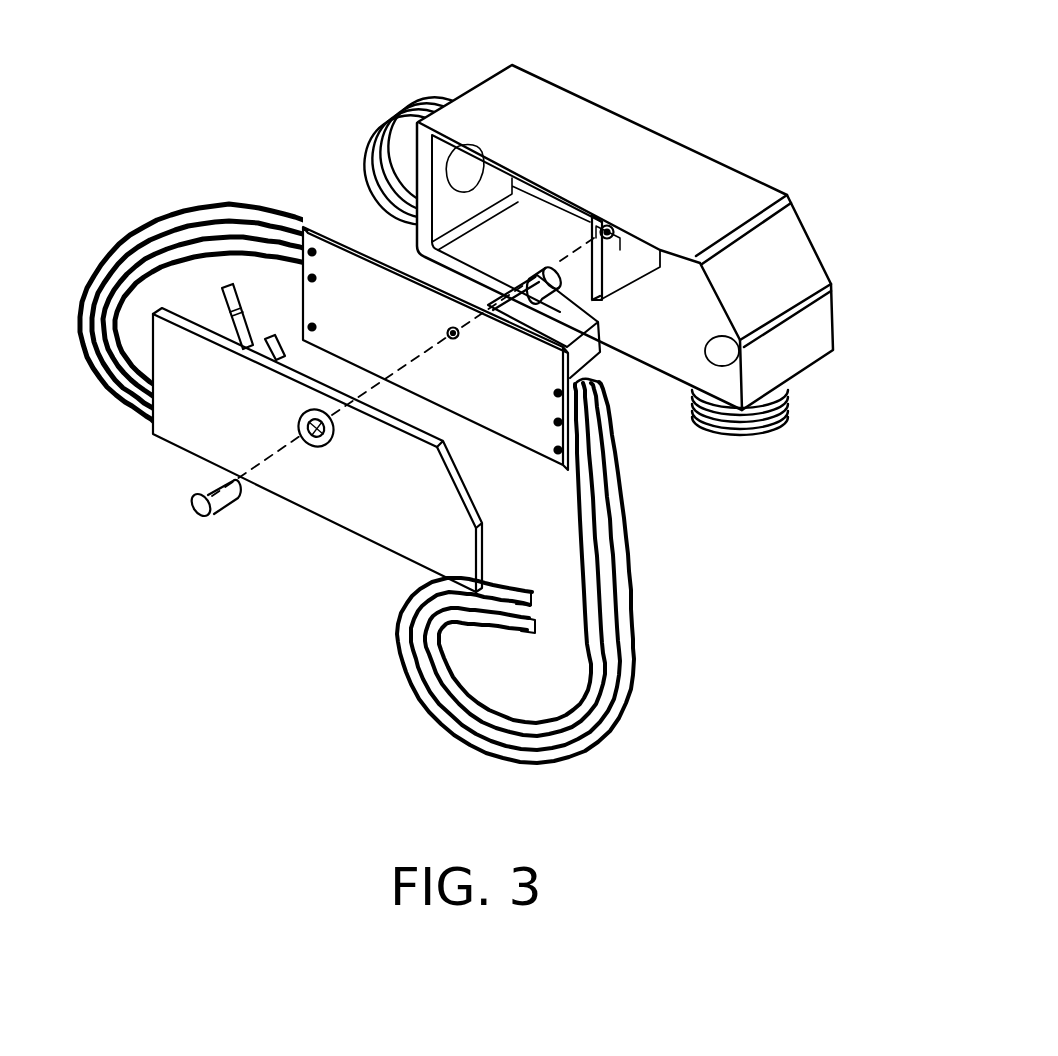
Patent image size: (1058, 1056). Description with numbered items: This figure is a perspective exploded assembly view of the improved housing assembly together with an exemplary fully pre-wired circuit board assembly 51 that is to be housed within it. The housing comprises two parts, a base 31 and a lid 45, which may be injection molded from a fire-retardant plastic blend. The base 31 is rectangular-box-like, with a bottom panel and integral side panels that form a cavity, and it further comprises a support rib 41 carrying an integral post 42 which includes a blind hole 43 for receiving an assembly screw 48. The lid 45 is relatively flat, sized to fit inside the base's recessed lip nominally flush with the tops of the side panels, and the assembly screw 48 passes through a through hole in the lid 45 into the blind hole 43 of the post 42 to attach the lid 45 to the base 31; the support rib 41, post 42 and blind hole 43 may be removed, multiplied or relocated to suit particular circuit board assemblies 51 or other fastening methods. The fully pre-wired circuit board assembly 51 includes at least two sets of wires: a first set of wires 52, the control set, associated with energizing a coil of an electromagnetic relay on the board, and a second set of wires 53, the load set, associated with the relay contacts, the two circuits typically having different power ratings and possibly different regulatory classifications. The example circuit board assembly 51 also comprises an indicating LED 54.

The base 31 is at (732, 137).
The support rib 41 is at (610, 280).
The post 42 is at (618, 243).
The blind hole 43 is at (610, 237).
The lid 45 is at (323, 480).
The assembly screw 48 is at (198, 520).
The fully pre-wired circuit board assembly 51 is at (338, 210).
The first set of wires 52 is at (659, 721).
The second set of wires 53 is at (123, 194).
The indicating LED 54 is at (545, 266).